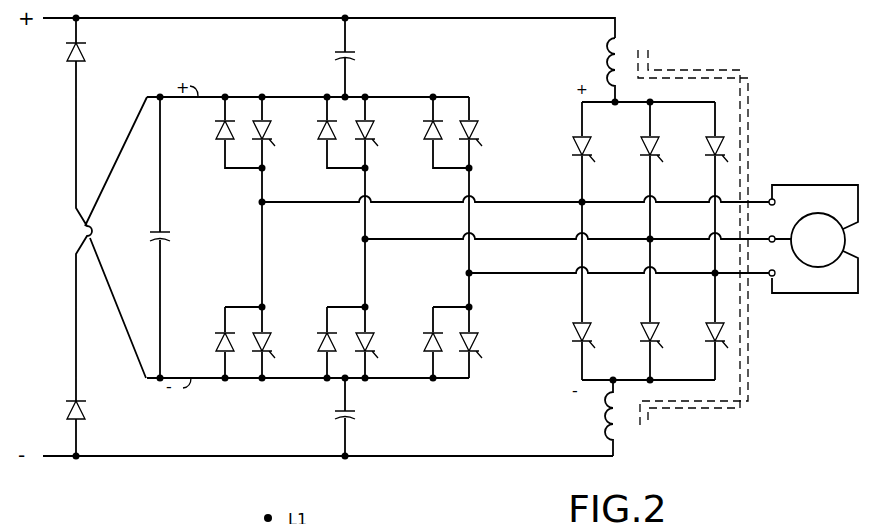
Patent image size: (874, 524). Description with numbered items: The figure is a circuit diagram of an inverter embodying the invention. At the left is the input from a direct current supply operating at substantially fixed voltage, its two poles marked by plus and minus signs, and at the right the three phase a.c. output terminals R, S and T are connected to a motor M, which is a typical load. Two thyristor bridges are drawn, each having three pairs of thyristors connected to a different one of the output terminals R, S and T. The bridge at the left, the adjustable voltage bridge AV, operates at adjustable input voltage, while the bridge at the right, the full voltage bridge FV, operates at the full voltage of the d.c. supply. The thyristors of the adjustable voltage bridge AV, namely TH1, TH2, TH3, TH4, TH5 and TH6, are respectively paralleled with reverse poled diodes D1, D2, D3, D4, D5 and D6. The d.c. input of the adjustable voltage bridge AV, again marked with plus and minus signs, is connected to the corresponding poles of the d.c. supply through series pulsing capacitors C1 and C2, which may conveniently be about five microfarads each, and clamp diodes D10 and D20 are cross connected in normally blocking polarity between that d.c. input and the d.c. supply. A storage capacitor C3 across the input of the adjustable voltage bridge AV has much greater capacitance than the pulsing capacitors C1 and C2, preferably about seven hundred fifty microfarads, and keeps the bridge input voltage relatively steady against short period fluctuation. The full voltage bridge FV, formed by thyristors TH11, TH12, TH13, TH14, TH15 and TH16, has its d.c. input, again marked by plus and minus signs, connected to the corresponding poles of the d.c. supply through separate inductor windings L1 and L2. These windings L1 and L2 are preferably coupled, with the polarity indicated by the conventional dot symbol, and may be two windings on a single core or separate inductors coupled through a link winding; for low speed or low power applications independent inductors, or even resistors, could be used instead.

The clamp diode D10 is at (55, 40).
The clamp diode D20 is at (54, 411).
The pulsing capacitor C1 is at (361, 58).
The pulsing capacitor C2 is at (360, 421).
The storage capacitor C3 is at (175, 243).
The reverse poled diode D1 is at (214, 131).
The reverse poled diode D2 is at (210, 338).
The reverse poled diode D3 is at (319, 141).
The reverse poled diode D4 is at (315, 351).
The reverse poled diode D5 is at (423, 142).
The reverse poled diode D6 is at (422, 352).
The thyristor TH1 is at (274, 128).
The thyristor TH2 is at (274, 337).
The thyristor TH3 is at (374, 128).
The thyristor TH4 is at (377, 337).
The thyristor TH5 is at (486, 133).
The thyristor TH6 is at (484, 345).
The thyristor TH11 is at (568, 141).
The thyristor TH12 is at (567, 327).
The thyristor TH13 is at (639, 141).
The thyristor TH14 is at (636, 328).
The thyristor TH15 is at (704, 141).
The thyristor TH16 is at (701, 328).
The inductor winding L1 is at (637, 62).
The inductor winding L2 is at (633, 418).
The a.c. output terminal R is at (518, 191).
The a.c. output terminal S is at (572, 228).
The a.c. output terminal T is at (630, 277).
The motor M is at (818, 240).
The adjustable voltage bridge AV is at (313, 244).
The full voltage bridge FV is at (615, 224).